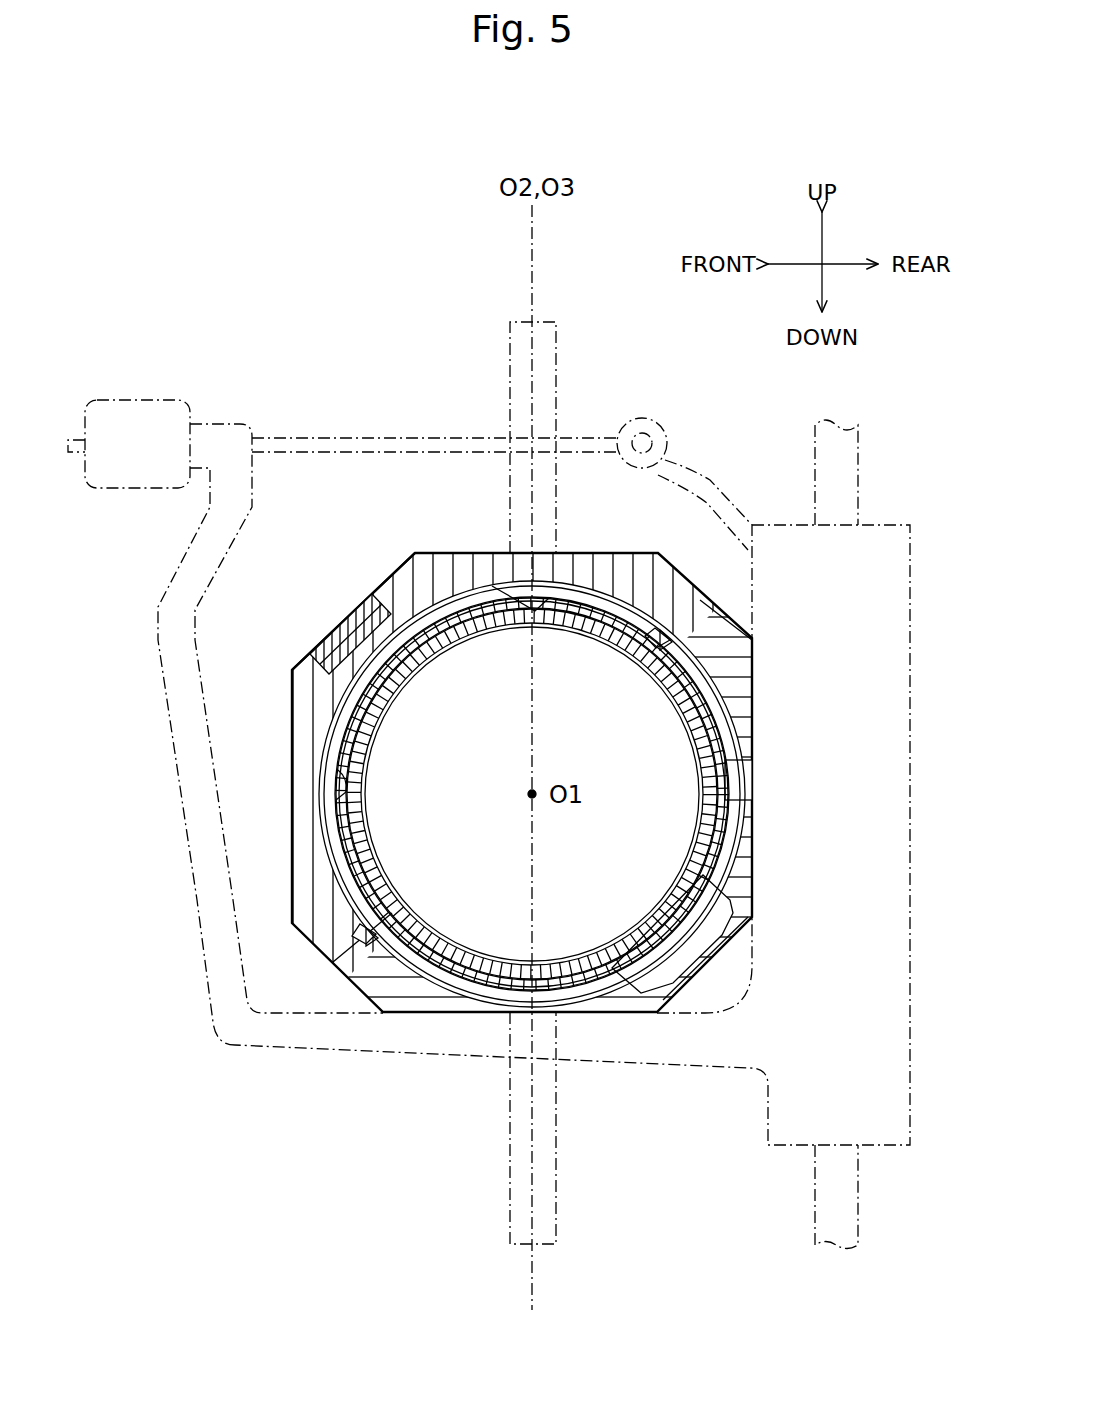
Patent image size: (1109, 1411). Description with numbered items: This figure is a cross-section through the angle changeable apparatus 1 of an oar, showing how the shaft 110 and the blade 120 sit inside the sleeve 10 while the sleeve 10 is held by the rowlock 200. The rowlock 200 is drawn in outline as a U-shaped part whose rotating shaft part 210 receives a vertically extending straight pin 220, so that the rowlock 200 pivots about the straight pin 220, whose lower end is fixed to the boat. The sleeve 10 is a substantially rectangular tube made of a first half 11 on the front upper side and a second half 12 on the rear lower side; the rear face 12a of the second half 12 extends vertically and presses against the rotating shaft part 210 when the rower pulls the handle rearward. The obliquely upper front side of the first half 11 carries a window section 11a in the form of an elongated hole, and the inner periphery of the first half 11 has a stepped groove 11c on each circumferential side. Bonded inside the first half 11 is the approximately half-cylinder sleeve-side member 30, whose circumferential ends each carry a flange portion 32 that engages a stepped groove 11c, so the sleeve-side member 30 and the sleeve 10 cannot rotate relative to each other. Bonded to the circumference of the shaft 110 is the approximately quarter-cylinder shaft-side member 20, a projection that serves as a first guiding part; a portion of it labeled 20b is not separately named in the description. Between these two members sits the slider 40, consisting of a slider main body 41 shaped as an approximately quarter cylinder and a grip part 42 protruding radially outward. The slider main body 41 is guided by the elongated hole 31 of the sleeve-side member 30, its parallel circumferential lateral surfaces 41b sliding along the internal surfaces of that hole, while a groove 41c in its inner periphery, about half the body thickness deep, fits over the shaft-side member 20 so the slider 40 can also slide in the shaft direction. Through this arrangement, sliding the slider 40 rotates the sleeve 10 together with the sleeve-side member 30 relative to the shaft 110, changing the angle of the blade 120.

The angle changeable apparatus 1 is at (118, 198).
The sleeve 10 is at (143, 1040).
The first half 11 is at (312, 946).
The window section 11a is at (400, 590).
The stepped groove 11c is at (647, 628).
The second half 12 is at (362, 996).
The rear face 12a is at (746, 720).
The shaft-side member 20 is at (330, 730).
The ring member projection 20b is at (505, 590).
The sleeve-side member 30 is at (335, 858).
The elongated hole 31 is at (335, 796).
The flange portion 32 is at (672, 634).
The slider 40 is at (358, 598).
The slider main body 41 is at (333, 690).
The circumferential lateral surfaces 41b is at (553, 598).
The groove 41c is at (486, 640).
The grip part 42 is at (345, 618).
The shaft 110 is at (612, 642).
The blade 120 is at (556, 1193).
The rowlock 200 is at (176, 553).
The rotating shaft part 210 is at (913, 650).
The straight pin 220 is at (858, 452).